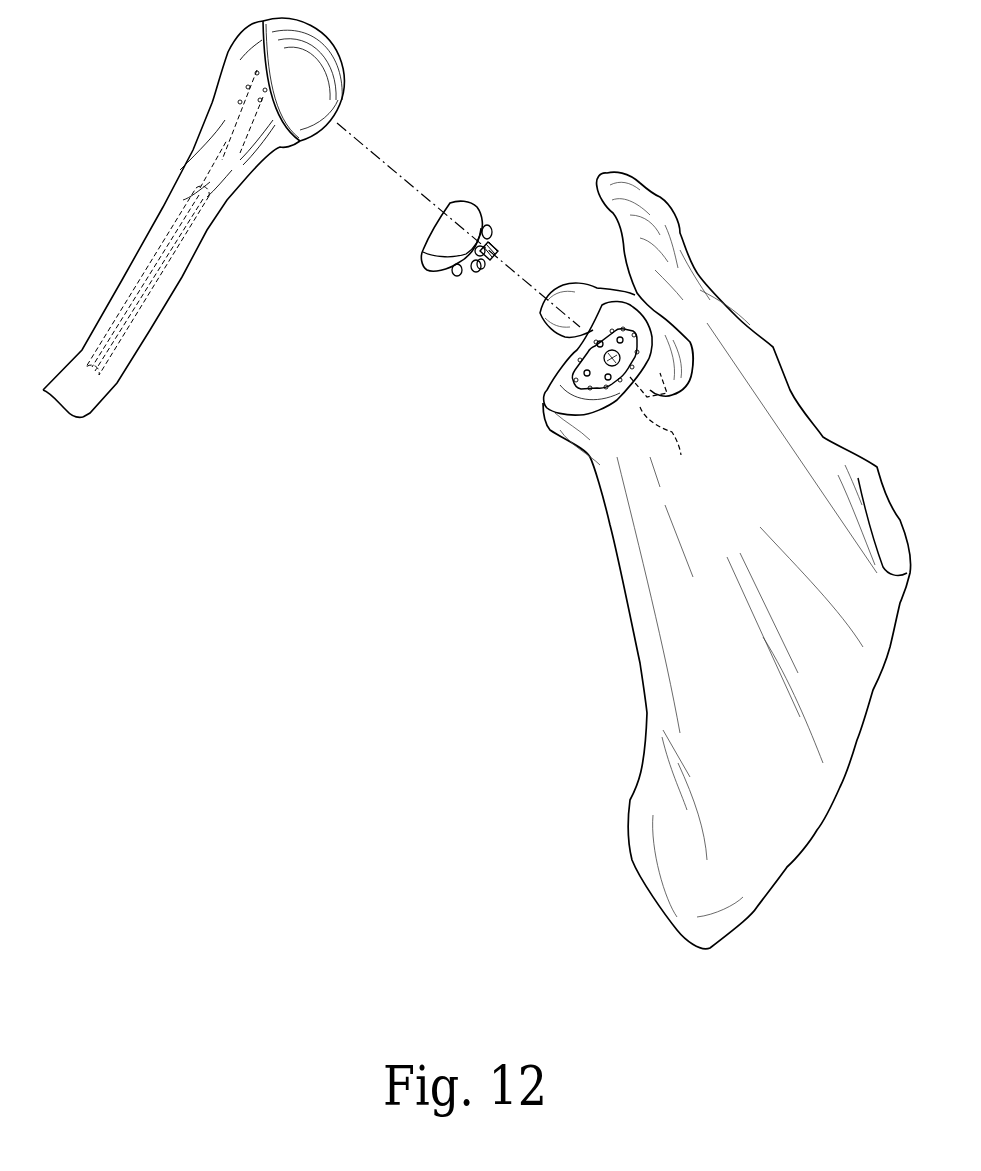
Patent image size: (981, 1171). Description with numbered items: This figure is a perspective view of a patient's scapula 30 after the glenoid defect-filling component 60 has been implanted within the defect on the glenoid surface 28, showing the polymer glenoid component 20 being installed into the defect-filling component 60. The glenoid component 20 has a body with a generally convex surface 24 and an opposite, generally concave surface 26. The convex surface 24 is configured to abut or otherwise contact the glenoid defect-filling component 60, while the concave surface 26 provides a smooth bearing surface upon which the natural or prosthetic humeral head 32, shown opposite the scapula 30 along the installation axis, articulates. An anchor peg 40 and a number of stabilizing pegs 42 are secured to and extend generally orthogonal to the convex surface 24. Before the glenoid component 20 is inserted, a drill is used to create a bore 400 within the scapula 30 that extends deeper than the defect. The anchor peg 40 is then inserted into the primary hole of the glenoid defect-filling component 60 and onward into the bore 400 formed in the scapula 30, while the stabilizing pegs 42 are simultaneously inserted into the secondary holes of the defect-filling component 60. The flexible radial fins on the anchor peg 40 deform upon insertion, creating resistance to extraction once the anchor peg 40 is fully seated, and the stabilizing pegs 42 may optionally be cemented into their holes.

The glenoid component 20 is at (454, 215).
The convex surface 24 is at (473, 271).
The concave surface 26 is at (447, 242).
The glenoid surface 28 is at (543, 400).
The scapula 30 is at (773, 427).
The humeral head 32 is at (347, 68).
The anchor peg 40 is at (498, 250).
The stabilizing pegs 42 is at (489, 229).
The glenoid defect-filling component 60 is at (637, 325).
The bore 400 is at (667, 428).